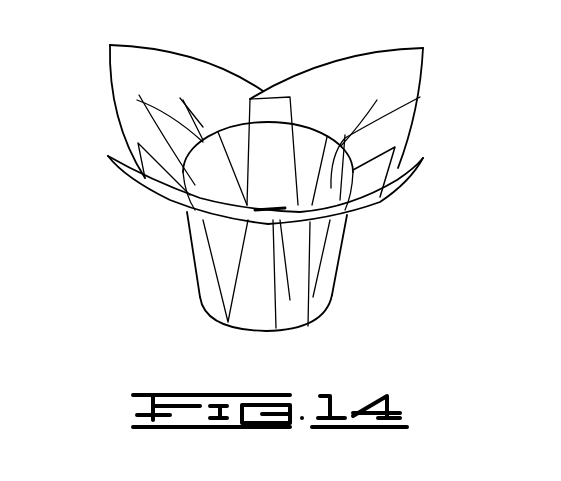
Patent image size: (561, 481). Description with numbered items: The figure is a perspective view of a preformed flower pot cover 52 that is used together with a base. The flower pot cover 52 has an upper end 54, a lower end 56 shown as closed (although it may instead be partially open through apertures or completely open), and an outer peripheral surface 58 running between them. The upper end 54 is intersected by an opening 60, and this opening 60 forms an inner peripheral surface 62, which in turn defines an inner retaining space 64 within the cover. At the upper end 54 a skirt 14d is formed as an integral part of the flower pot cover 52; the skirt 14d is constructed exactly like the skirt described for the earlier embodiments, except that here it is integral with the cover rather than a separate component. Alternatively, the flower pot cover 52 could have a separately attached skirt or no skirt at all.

The skirt 14d is at (430, 60).
The flower pot cover 52 is at (338, 65).
The upper end 54 is at (400, 108).
The lower end 56 is at (222, 323).
The outer peripheral surface 58 is at (320, 258).
The opening 60 is at (137, 100).
The inner peripheral surface 62 is at (200, 165).
The inner retaining space 64 is at (397, 148).